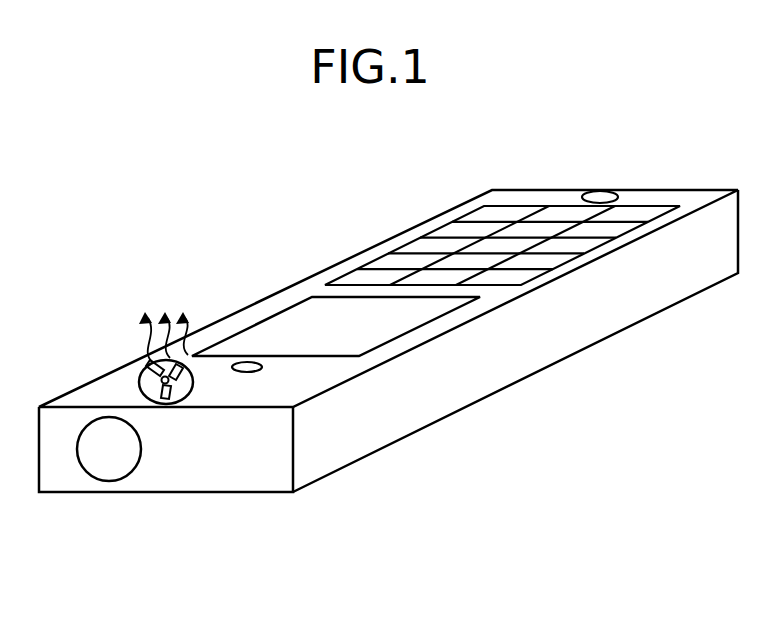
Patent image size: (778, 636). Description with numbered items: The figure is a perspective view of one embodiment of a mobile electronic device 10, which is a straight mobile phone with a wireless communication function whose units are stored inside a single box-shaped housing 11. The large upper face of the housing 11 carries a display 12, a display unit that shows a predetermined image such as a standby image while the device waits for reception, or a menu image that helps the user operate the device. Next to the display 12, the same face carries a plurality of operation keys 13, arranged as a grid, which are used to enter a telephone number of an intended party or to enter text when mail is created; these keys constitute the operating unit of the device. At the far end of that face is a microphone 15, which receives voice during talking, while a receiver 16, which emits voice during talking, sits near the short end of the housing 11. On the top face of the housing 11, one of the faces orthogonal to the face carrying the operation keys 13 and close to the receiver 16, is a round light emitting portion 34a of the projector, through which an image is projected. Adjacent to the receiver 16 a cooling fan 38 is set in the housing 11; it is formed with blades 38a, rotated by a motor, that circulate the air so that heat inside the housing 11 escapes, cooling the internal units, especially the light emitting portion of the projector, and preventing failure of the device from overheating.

The mobile electronic device 10 is at (228, 209).
The housing 11 is at (538, 355).
The display 12 is at (260, 342).
The operation keys 13 is at (633, 212).
The microphone 15 is at (597, 197).
The receiver 16 is at (244, 362).
The light emitting portion 34a is at (110, 450).
The cooling fan 38 is at (111, 358).
The blades 38a is at (152, 382).